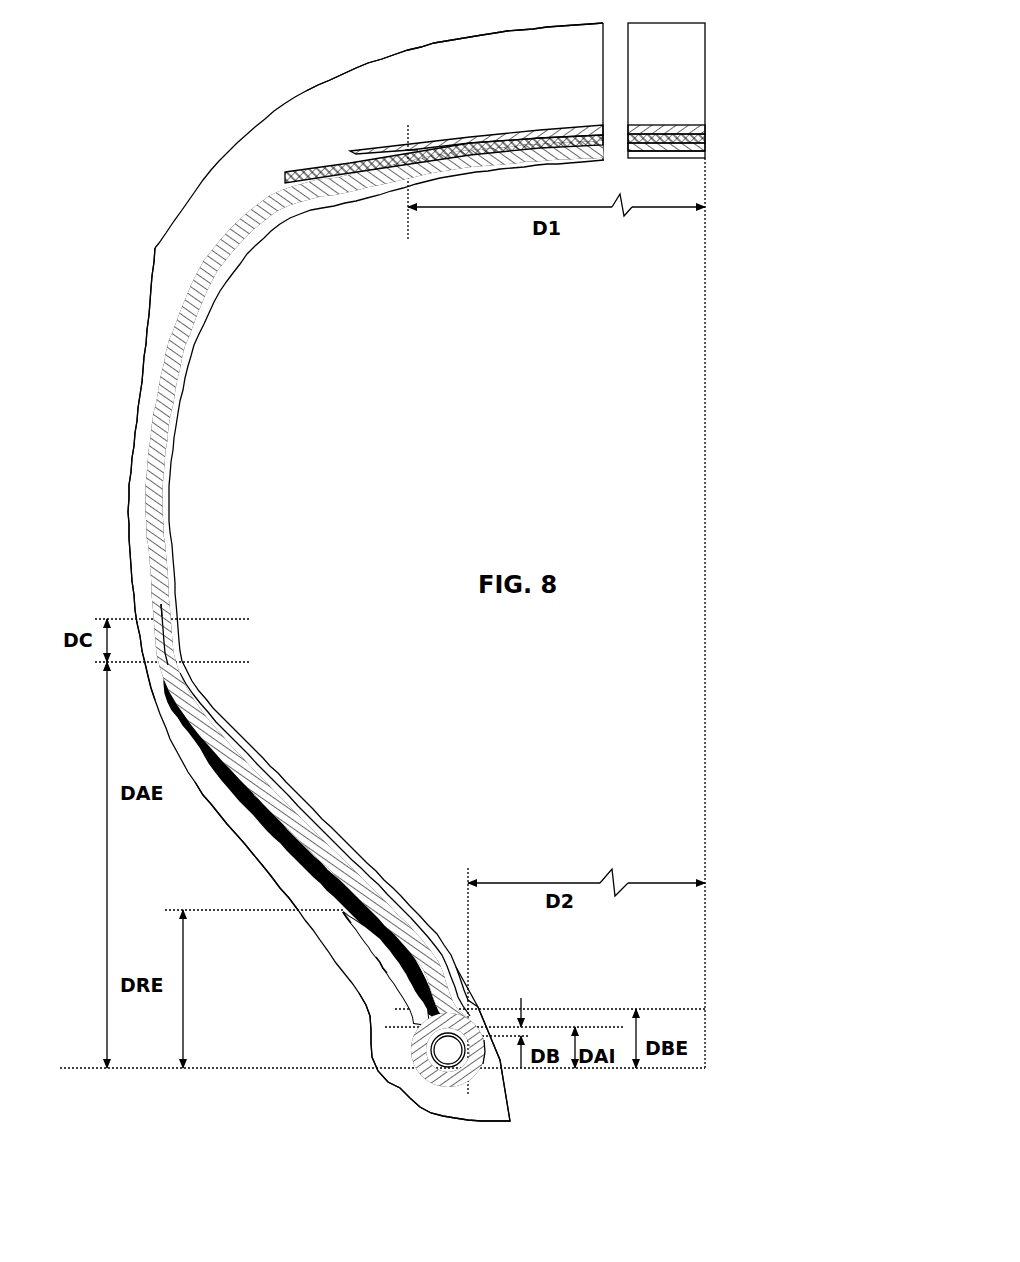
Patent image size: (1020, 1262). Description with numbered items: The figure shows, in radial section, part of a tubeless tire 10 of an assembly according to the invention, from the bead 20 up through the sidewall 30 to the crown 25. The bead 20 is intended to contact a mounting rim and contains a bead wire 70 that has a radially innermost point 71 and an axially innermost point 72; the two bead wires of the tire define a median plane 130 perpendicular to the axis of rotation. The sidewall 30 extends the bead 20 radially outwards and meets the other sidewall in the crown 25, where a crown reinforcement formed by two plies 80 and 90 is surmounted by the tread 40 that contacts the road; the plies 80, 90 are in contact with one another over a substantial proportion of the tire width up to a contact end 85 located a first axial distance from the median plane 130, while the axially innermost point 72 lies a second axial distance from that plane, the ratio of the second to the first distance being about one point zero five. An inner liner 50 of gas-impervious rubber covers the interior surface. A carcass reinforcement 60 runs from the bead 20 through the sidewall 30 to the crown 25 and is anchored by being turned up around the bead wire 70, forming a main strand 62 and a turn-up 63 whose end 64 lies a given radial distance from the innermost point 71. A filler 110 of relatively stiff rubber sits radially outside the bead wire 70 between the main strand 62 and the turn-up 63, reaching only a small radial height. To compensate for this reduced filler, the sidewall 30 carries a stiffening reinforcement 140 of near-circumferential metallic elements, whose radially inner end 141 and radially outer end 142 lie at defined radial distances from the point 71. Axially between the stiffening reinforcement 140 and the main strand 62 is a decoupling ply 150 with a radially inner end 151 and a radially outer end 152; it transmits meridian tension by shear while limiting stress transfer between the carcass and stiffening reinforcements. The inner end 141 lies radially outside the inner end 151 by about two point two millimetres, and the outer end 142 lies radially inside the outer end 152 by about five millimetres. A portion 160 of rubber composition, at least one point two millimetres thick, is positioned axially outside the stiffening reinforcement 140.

The tire 10 is at (180, 103).
The bead 20 is at (385, 1015).
The crown 25 is at (716, 25).
The sidewall 30 is at (142, 420).
The tread 40 is at (570, 87).
The inner liner 50 is at (196, 322).
The carcass reinforcement 60 is at (173, 378).
The main strand 62 is at (380, 897).
The turn-up 63 is at (374, 948).
The end of the turn-up 64 is at (338, 914).
The bead wire 70 is at (445, 1052).
The radially innermost point of the bead wire 71 is at (446, 1076).
The axially innermost point of the bead wire 72 is at (487, 1054).
The crown ply 80 is at (328, 170).
The contact end 85 is at (420, 148).
The crown ply 90 is at (370, 150).
The filler 110 is at (418, 1036).
The median plane 130 is at (712, 252).
The stiffening reinforcement 140 is at (228, 750).
The radially inner end of the stiffening reinforcement 141 is at (463, 1020).
The radially outer end of the stiffening reinforcement 142 is at (180, 674).
The decoupling ply 150 is at (172, 640).
The radially inner end of the decoupling ply 151 is at (484, 1024).
The radially outer end of the decoupling ply 152 is at (167, 614).
The portion of rubber composition 160 is at (276, 862).